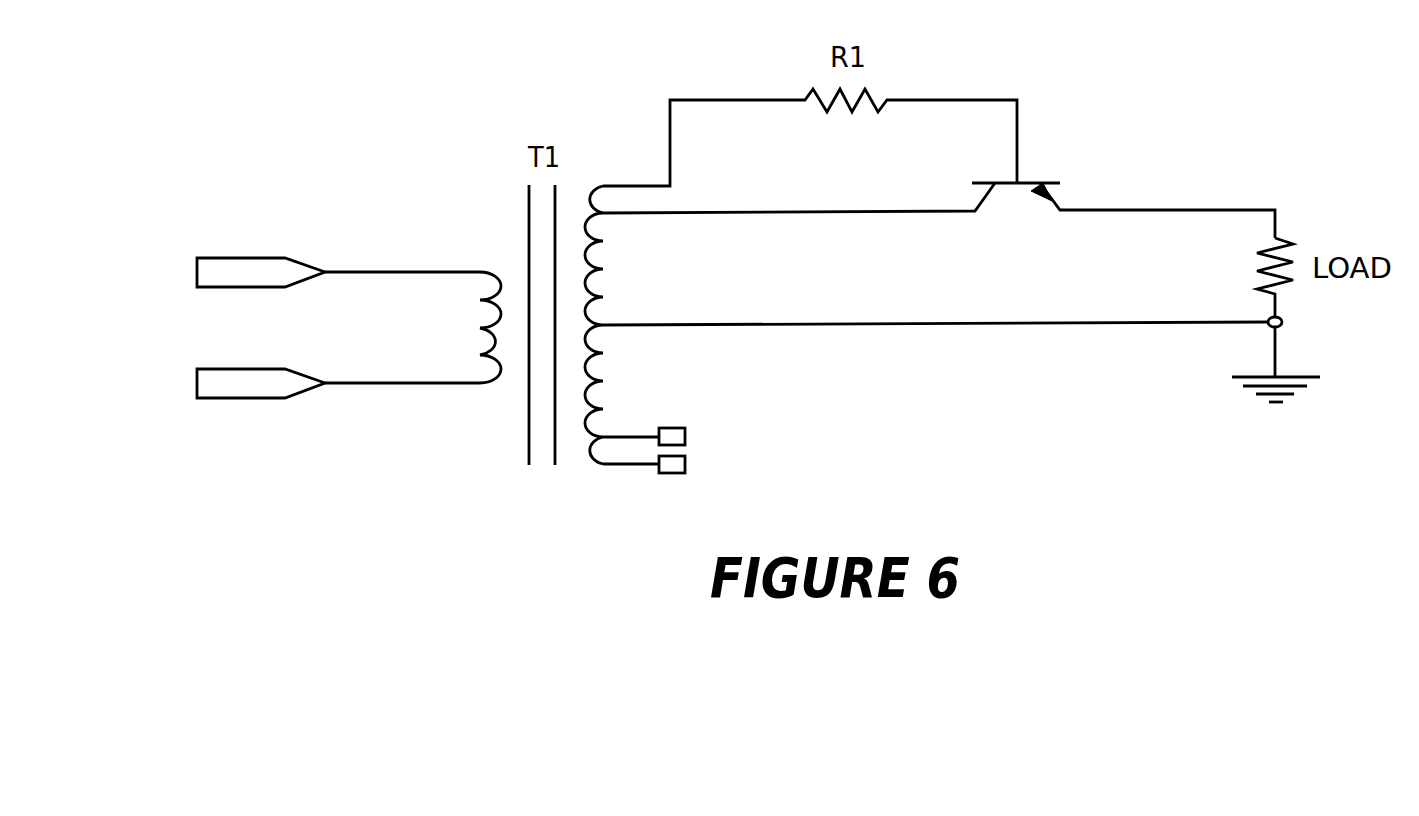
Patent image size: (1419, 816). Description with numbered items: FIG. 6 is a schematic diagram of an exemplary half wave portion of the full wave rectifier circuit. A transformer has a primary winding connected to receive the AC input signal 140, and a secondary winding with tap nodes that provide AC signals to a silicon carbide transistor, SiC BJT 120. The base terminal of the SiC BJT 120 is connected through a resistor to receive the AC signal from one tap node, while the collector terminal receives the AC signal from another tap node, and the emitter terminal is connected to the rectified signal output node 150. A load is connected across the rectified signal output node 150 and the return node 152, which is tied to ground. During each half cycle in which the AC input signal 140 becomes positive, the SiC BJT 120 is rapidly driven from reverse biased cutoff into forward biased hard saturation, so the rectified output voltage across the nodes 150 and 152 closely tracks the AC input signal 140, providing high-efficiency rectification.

The AC input signal 140 is at (303, 328).
The SiC BJT 120 is at (1165, 166).
The rectified signal output node 150 is at (1263, 194).
The return node 152 is at (935, 353).